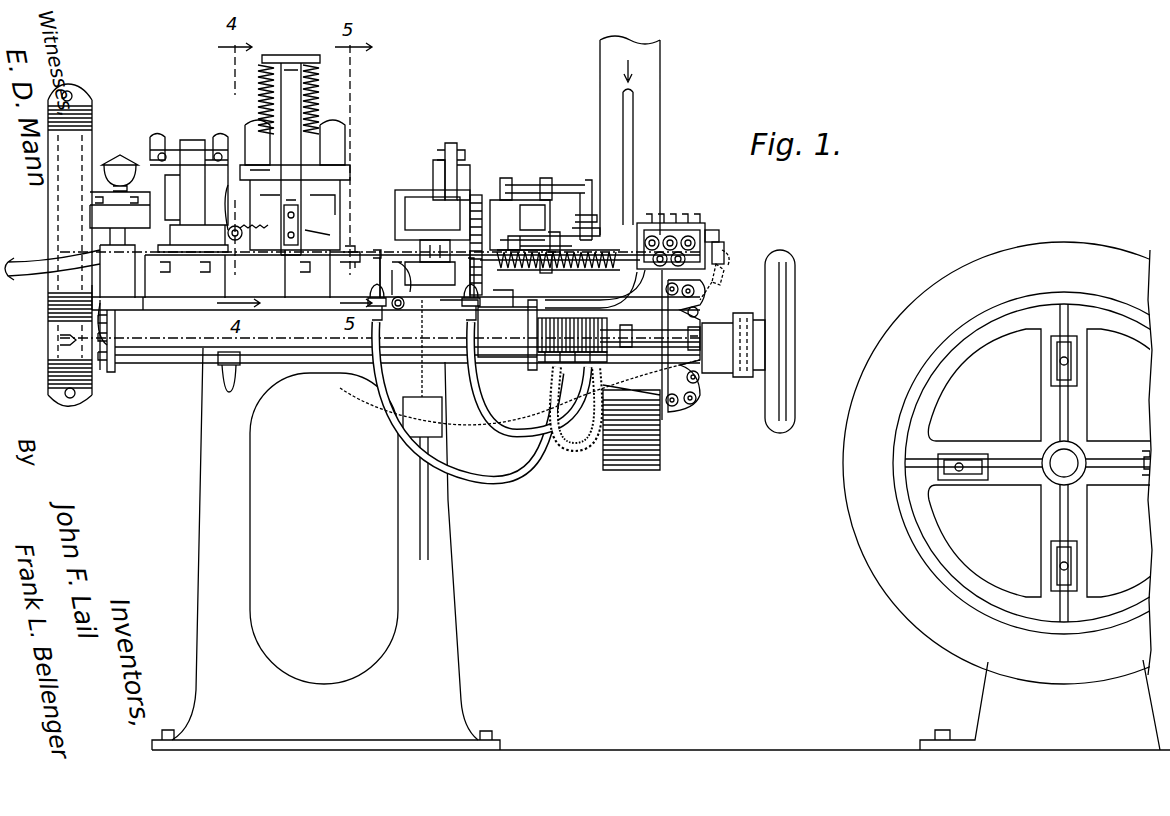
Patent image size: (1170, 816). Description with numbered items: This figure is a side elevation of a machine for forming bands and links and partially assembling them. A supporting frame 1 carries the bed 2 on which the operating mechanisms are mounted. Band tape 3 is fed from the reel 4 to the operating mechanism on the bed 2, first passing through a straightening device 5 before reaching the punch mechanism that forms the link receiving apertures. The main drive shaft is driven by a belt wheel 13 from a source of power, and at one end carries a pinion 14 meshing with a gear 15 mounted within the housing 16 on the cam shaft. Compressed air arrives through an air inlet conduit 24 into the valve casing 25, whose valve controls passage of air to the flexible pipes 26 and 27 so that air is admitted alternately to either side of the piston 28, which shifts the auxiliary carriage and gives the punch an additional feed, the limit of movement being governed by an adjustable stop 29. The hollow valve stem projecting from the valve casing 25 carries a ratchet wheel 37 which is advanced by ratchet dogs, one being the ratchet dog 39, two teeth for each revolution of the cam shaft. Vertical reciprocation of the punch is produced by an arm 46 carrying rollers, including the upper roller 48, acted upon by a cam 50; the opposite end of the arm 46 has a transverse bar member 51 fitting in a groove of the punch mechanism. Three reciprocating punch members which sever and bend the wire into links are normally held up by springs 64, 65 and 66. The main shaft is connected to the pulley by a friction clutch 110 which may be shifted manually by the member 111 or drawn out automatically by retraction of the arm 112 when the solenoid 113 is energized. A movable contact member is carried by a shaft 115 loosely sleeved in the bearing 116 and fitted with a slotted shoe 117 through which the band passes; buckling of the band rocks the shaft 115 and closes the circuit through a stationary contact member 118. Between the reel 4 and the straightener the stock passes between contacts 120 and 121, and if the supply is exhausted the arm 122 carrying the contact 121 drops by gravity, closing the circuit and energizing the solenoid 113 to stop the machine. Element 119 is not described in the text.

The supporting frame 1 is at (202, 500).
The bed 2 is at (168, 338).
The band tape 3 is at (935, 302).
The reel 4 is at (848, 457).
The straightening device 5 is at (700, 232).
The belt wheel 13 is at (635, 470).
The pinion 14 is at (60, 338).
The gear 15 is at (60, 225).
The housing 16 is at (52, 186).
The air inlet conduit 24 is at (635, 125).
The valve casing 25 is at (540, 198).
The flexible pipe 26 is at (505, 478).
The flexible pipe 27 is at (565, 444).
The piston 28 is at (417, 428).
The adjustable stop 29 is at (548, 272).
The ratchet wheel 37 is at (500, 200).
The ratchet dog 39 is at (475, 200).
The arm 46 is at (433, 180).
The roller 48 is at (452, 143).
The cam 50 is at (482, 162).
The transverse bar member 51 is at (432, 215).
The spring 64 is at (303, 62).
The spring 65 is at (322, 95).
The spring 66 is at (262, 96).
The friction clutch 110 is at (668, 418).
The member 111 is at (468, 358).
The arm 112 is at (672, 328).
The solenoid 113 is at (610, 318).
The shaft 115 is at (407, 278).
The bearing 116 is at (380, 285).
The slotted shoe 117 is at (345, 266).
The stationary contact member 118 is at (450, 290).
The block 119 is at (430, 262).
The contact 120 is at (724, 270).
The contact 121 is at (724, 246).
The arm 122 is at (719, 233).